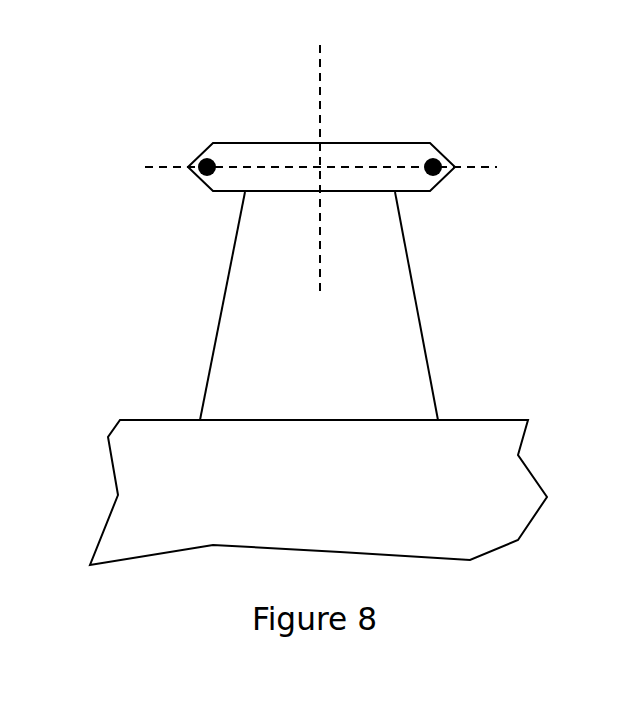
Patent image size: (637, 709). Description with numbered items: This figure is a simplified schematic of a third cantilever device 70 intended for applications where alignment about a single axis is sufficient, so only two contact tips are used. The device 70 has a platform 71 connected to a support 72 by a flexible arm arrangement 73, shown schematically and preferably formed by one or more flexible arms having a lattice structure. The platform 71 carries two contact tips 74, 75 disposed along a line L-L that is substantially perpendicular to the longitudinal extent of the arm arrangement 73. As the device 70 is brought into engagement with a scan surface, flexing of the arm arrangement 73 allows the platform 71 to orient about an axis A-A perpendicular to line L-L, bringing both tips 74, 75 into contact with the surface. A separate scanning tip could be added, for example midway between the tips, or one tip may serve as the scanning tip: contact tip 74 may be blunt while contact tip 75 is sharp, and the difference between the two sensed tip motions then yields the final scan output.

The cantilever device 70 is at (78, 129).
The platform 71 is at (321, 140).
The support 72 is at (297, 483).
The flexible arm arrangement 73 is at (289, 306).
The contact tip 74 is at (199, 162).
The contact tip 75 is at (442, 157).